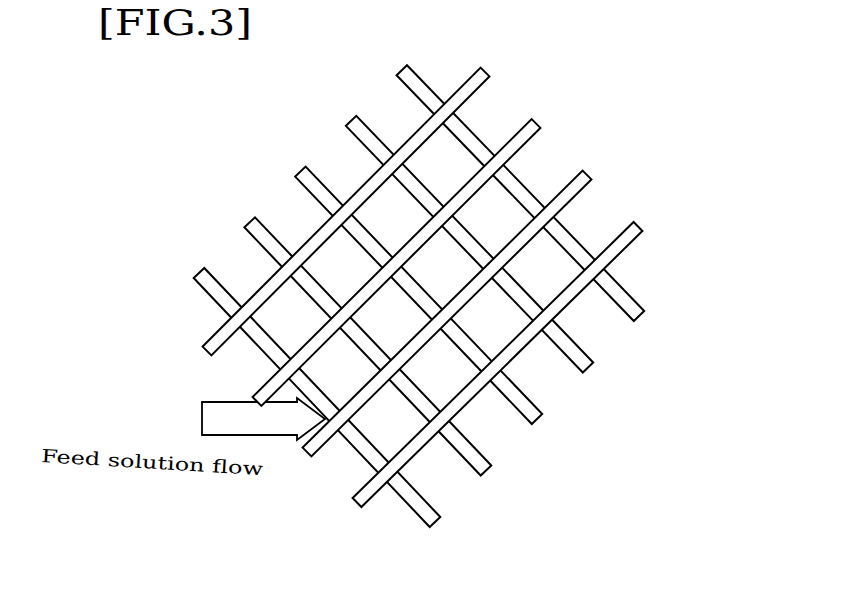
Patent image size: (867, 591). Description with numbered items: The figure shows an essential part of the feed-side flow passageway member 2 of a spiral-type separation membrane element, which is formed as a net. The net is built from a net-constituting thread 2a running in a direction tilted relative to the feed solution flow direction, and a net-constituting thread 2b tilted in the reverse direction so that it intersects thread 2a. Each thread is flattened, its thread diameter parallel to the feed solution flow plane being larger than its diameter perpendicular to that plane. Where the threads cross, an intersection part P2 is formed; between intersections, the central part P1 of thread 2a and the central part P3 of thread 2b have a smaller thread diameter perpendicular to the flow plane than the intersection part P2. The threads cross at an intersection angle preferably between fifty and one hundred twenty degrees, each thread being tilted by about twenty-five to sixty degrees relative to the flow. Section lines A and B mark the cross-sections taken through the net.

The feed-side flow passageway member 2 is at (419, 289).
The net-constituting thread 2a is at (529, 147).
The net-constituting thread 2b is at (573, 369).
The central part P1 is at (585, 311).
The intersection part P2 is at (547, 302).
The central part P3 is at (510, 306).
The section line A- A is at (445, 174).
The section line B- B is at (490, 356).